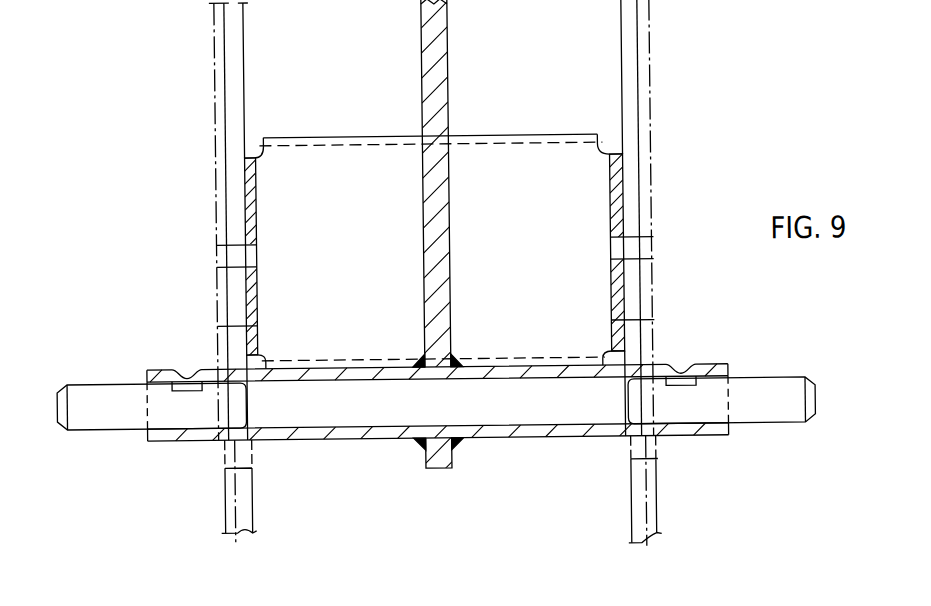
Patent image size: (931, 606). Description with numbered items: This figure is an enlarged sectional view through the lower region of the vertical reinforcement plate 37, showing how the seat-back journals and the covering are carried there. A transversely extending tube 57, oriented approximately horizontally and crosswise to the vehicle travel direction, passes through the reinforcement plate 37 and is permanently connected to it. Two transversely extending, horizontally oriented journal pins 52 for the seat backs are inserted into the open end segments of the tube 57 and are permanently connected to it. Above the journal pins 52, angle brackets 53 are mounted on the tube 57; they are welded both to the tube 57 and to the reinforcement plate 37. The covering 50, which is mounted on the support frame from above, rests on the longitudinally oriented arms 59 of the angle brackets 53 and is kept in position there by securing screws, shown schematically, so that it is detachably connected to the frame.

The reinforcement plate 37 is at (440, 14).
The covering 50 is at (230, 40).
The journal pins 52 is at (83, 398).
The angle brackets 53 is at (320, 138).
The tube 57 is at (355, 440).
The arms 59 is at (247, 209).